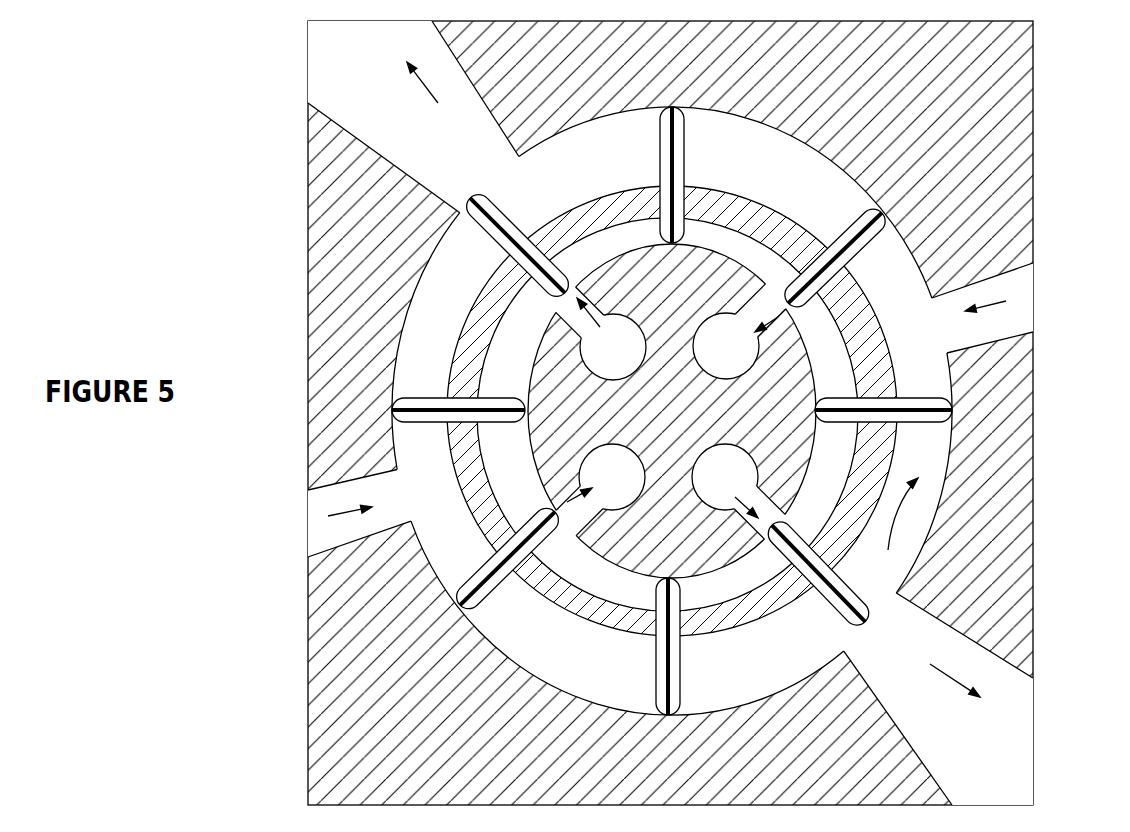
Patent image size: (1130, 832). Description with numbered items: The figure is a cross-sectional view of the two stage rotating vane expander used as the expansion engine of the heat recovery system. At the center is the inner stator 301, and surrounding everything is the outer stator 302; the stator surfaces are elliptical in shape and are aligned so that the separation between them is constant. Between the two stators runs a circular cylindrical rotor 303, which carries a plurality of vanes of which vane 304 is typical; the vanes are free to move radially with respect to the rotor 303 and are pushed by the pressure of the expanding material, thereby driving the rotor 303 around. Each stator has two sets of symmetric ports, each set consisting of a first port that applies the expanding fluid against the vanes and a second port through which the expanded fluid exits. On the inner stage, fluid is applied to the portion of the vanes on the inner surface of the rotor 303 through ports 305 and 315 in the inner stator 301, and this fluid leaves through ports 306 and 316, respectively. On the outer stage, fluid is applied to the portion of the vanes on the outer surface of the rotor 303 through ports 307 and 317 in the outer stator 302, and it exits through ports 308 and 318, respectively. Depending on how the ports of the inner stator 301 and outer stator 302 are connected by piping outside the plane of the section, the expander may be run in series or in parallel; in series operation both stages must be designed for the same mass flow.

The inner stator 301 is at (568, 413).
The outer stator 302 is at (1018, 116).
The rotor 303 is at (785, 226).
The vane 304 is at (660, 145).
The port 305 is at (597, 331).
The port 306 is at (596, 492).
The port 307 is at (329, 514).
The port 308 is at (413, 117).
The port 315 is at (740, 492).
The port 316 is at (741, 330).
The port 317 is at (1018, 308).
The port 318 is at (938, 699).